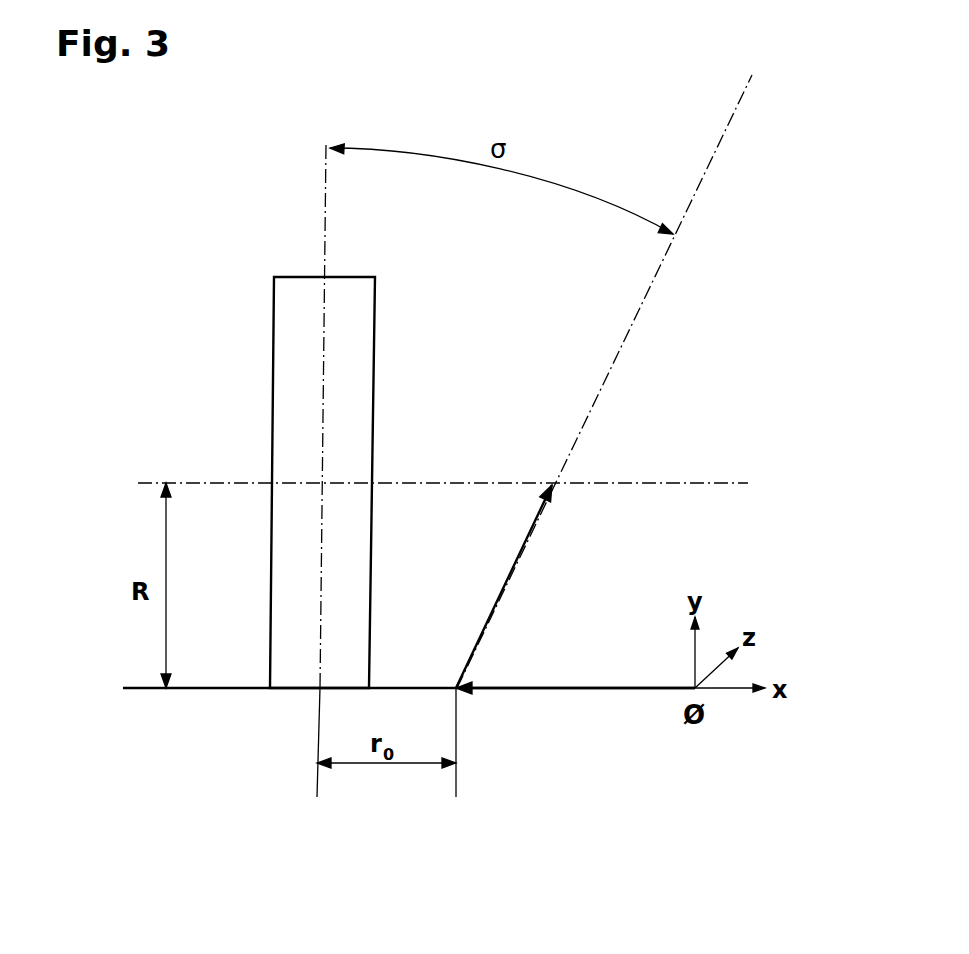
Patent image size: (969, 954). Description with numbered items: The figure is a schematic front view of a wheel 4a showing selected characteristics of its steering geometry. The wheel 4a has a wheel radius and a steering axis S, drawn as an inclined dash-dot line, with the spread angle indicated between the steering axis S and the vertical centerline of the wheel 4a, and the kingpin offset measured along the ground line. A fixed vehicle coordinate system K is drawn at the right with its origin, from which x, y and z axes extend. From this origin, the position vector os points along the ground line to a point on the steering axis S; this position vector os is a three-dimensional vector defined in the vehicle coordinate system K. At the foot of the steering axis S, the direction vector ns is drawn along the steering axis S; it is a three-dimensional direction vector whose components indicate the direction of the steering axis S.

The wheel 4a is at (367, 342).
The steering axis S is at (733, 112).
The fixed vehicle coordinate system K is at (762, 582).
The direction vector ns is at (508, 575).
The position vector os is at (592, 693).